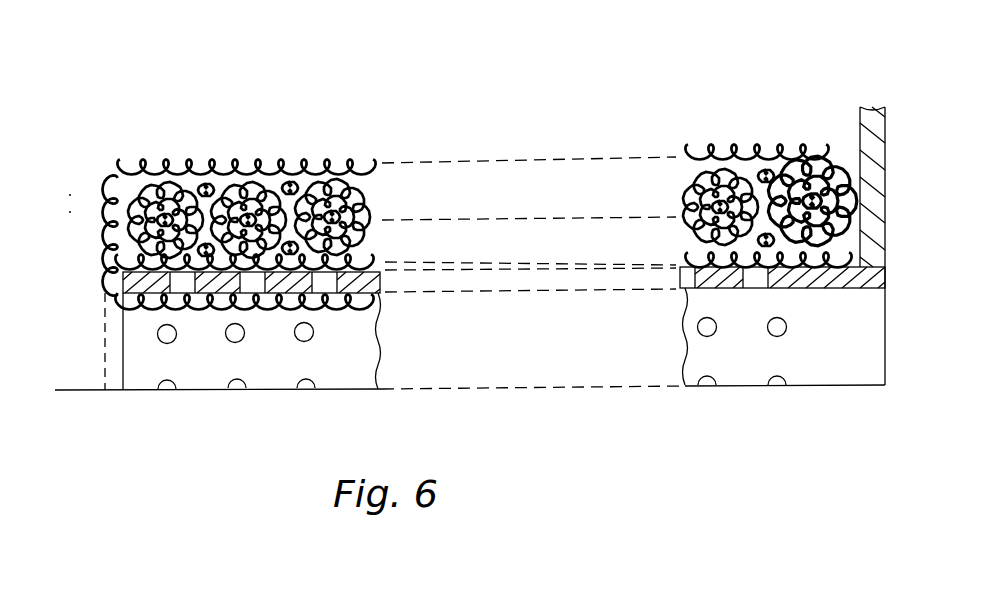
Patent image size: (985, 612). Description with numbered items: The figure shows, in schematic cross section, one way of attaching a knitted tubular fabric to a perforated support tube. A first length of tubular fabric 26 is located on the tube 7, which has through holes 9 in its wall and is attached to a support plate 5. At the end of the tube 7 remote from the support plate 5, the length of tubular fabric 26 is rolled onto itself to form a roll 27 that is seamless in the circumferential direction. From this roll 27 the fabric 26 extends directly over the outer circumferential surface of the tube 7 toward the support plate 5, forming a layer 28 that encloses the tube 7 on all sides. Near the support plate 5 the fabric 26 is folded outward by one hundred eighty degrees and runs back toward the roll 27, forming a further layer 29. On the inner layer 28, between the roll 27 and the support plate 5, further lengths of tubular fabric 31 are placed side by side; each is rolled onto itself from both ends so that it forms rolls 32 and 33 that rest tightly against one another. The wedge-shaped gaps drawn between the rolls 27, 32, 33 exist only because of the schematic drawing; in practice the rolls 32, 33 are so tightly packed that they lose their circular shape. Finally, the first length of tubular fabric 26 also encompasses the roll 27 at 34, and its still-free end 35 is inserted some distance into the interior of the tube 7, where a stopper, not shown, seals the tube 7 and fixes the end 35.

The support plate 5 is at (873, 137).
The tube 7 is at (130, 376).
The through holes 9 is at (165, 388).
The first length of tubular fabric 26 is at (354, 150).
The roll 27 is at (194, 195).
The layer 28 is at (318, 272).
The further layer 29 is at (710, 150).
The further lengths of tubular fabric 31 is at (283, 185).
The roll 32 is at (232, 195).
The roll 33 is at (372, 197).
The encompassing portion 34 is at (118, 176).
The still-free end 35 is at (255, 297).